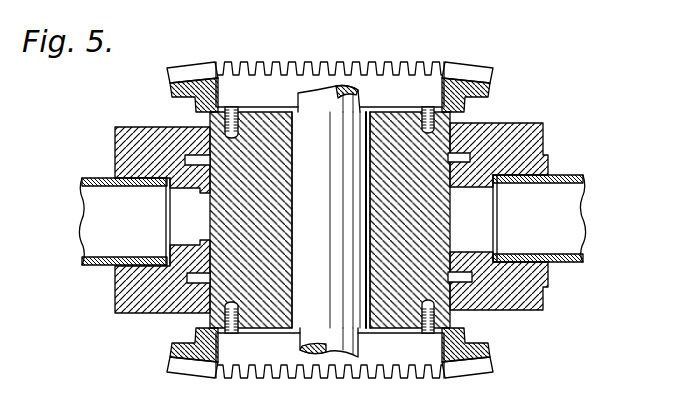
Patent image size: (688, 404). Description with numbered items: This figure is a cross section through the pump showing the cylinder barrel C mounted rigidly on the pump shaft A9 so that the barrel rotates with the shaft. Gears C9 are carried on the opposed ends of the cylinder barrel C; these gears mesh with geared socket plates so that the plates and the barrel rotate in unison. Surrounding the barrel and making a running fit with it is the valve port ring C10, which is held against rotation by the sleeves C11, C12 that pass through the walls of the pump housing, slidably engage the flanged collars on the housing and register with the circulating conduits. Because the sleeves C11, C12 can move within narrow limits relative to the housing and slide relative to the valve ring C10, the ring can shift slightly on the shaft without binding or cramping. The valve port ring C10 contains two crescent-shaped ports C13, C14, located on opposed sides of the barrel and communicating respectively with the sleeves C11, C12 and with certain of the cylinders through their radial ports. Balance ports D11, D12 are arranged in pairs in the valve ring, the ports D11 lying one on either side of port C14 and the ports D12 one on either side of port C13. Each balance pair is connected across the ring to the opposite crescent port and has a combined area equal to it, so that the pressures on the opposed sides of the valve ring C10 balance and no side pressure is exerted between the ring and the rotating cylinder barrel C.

The cylinder barrel C is at (427, 212).
The gears C9 is at (462, 72).
The valve port ring C10 is at (500, 289).
The sleeve C11 is at (568, 176).
The sleeve C12 is at (90, 178).
The crescent-shaped port C13 is at (472, 223).
The crescent-shaped port C14 is at (183, 227).
The balance ports D11 is at (192, 160).
The balance ports D12 is at (462, 156).
The pump shaft A9 is at (331, 222).